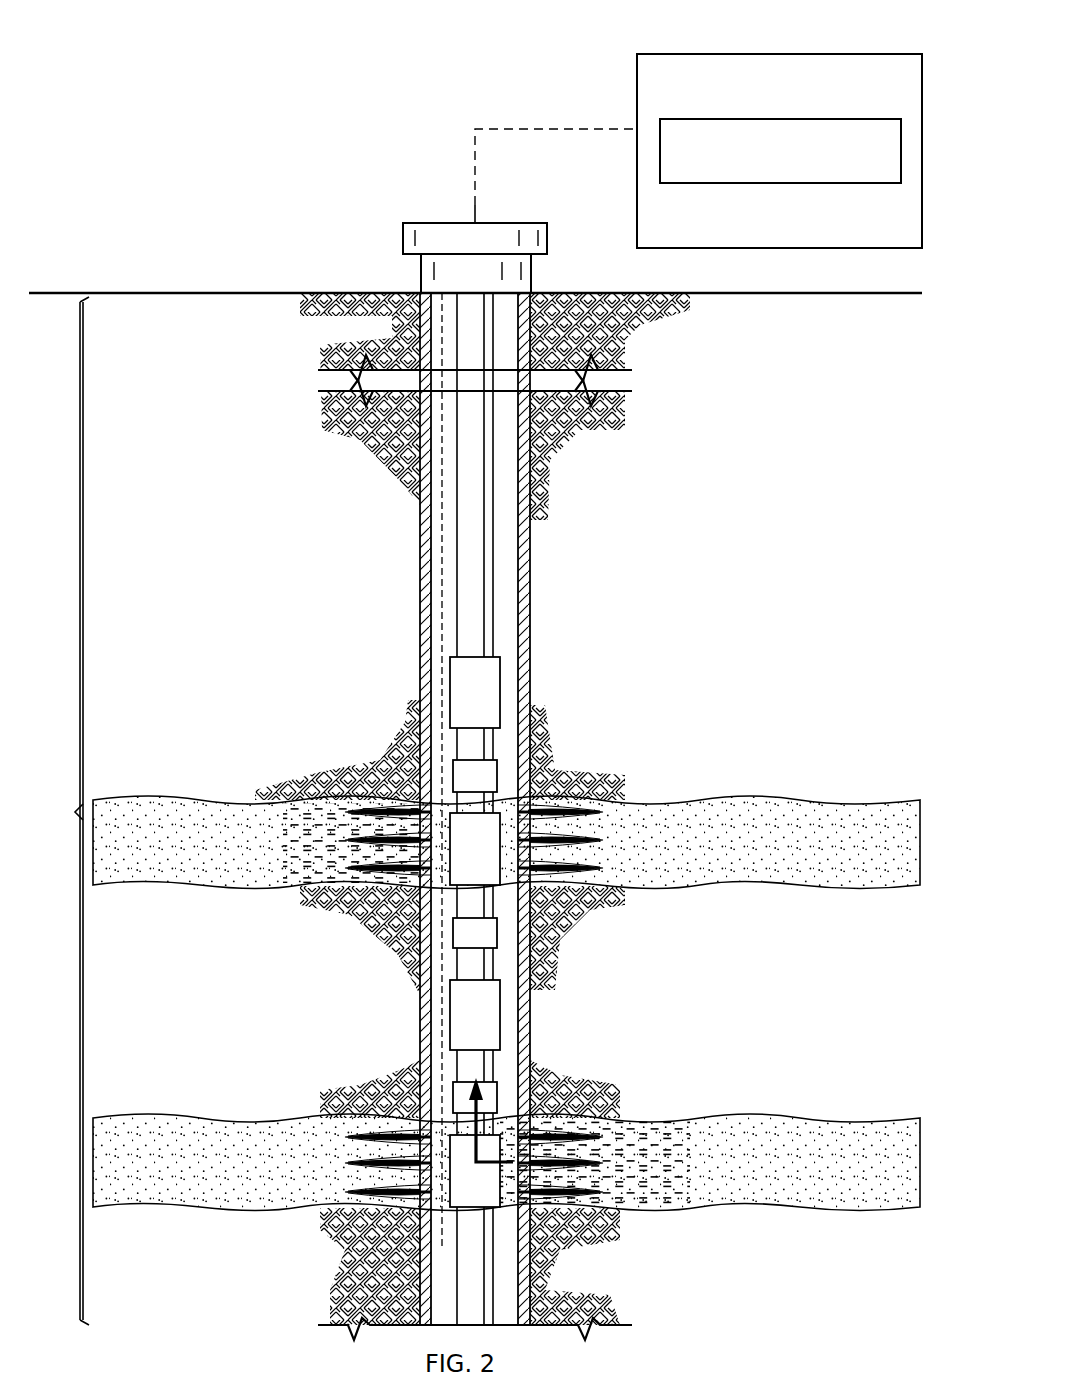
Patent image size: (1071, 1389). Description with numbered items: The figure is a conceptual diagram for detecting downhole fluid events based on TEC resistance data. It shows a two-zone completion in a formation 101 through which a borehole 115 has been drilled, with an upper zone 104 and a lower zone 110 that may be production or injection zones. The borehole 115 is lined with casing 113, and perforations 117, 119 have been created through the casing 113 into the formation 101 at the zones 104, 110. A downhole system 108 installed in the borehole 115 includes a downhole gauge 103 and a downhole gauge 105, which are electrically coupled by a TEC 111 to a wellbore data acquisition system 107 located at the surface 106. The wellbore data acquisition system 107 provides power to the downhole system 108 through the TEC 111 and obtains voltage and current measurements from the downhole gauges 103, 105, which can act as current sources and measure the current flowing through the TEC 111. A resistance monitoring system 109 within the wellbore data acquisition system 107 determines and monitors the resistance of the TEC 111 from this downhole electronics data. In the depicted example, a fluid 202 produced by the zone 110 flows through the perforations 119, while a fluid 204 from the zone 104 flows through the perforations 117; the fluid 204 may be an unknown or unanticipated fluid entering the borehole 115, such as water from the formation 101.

The formation 101 is at (57, 811).
The downhole gauge 103 is at (494, 693).
The zone 104 is at (167, 853).
The downhole gauge 105 is at (460, 1015).
The surface 106 is at (268, 292).
The wellbore data acquisition system 107 is at (780, 54).
The downhole system 108 is at (274, 588).
The resistance monitoring system 109 is at (783, 184).
The zone 110 is at (167, 1177).
The TEC 111 is at (465, 428).
The casing 113 is at (432, 1290).
The borehole 115 is at (510, 1249).
The perforations 117 is at (620, 810).
The perforations 119 is at (620, 1188).
The fluid 202 is at (633, 1122).
The fluid 204 is at (338, 806).